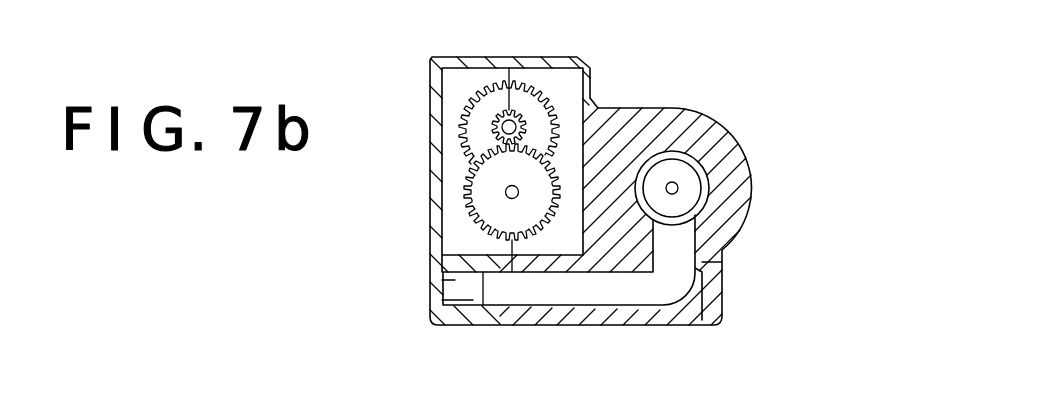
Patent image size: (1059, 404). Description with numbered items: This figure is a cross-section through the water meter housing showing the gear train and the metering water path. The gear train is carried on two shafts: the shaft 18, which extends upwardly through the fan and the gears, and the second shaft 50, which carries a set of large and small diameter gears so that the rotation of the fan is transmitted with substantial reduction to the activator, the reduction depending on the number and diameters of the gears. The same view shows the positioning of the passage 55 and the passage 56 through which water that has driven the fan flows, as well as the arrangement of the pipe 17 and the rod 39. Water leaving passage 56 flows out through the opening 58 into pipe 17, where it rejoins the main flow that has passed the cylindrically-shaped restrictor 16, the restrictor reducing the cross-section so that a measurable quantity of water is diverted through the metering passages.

The restrictor 16 is at (657, 165).
The upper extension 17 is at (677, 154).
The shaft 18 is at (510, 191).
The rod 39 is at (677, 183).
The second shaft 50 is at (509, 121).
The passage 55 is at (463, 292).
The passage 56 is at (600, 285).
The opening 58 is at (670, 226).